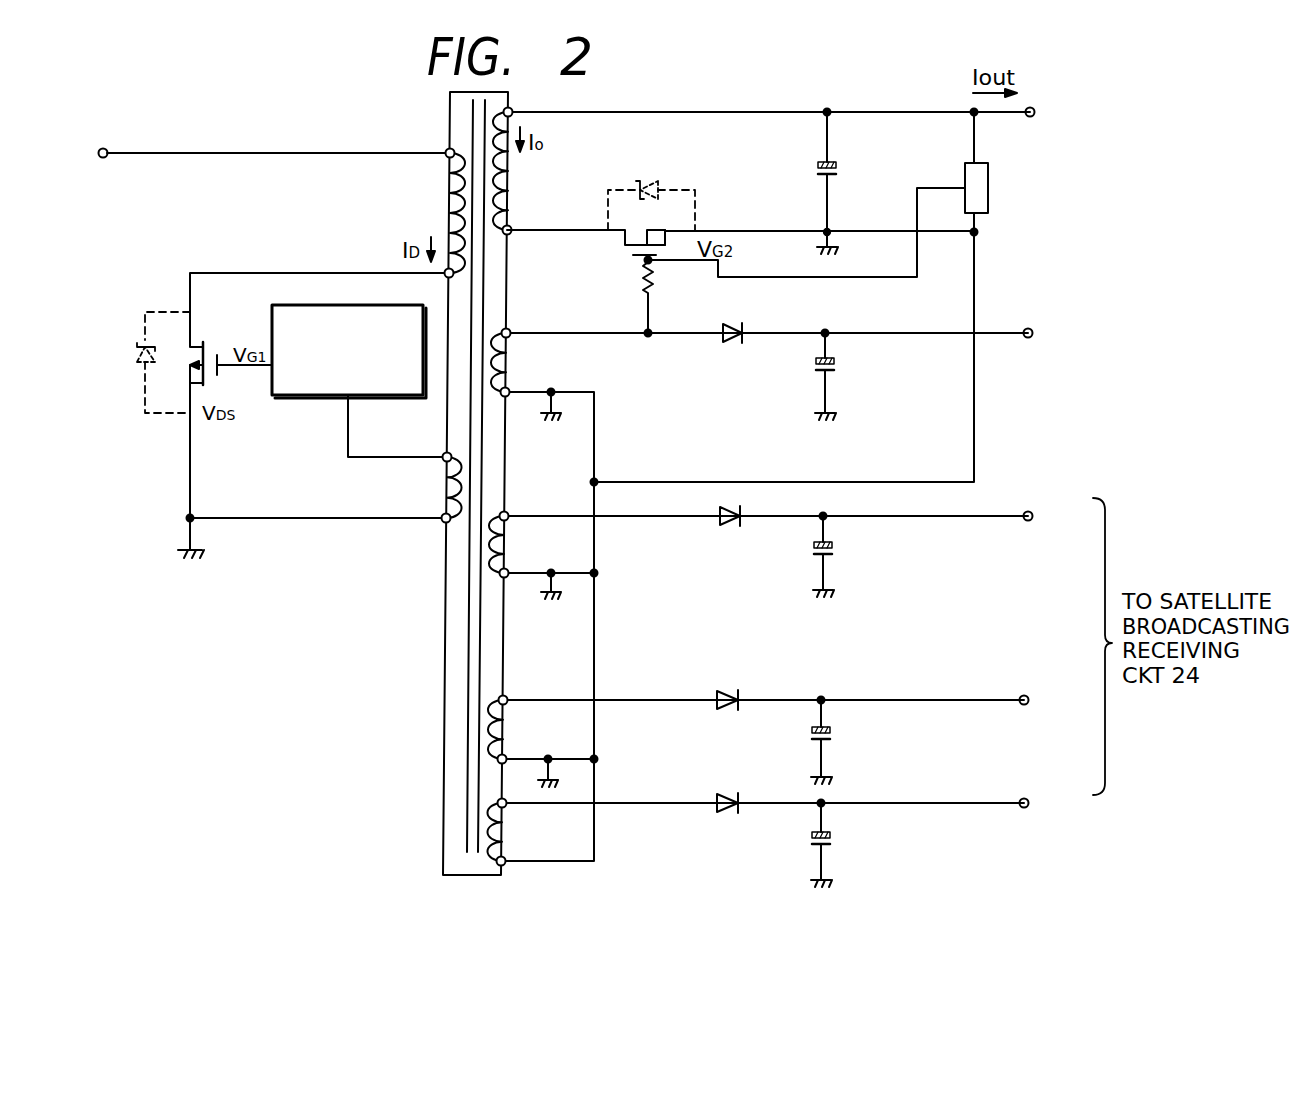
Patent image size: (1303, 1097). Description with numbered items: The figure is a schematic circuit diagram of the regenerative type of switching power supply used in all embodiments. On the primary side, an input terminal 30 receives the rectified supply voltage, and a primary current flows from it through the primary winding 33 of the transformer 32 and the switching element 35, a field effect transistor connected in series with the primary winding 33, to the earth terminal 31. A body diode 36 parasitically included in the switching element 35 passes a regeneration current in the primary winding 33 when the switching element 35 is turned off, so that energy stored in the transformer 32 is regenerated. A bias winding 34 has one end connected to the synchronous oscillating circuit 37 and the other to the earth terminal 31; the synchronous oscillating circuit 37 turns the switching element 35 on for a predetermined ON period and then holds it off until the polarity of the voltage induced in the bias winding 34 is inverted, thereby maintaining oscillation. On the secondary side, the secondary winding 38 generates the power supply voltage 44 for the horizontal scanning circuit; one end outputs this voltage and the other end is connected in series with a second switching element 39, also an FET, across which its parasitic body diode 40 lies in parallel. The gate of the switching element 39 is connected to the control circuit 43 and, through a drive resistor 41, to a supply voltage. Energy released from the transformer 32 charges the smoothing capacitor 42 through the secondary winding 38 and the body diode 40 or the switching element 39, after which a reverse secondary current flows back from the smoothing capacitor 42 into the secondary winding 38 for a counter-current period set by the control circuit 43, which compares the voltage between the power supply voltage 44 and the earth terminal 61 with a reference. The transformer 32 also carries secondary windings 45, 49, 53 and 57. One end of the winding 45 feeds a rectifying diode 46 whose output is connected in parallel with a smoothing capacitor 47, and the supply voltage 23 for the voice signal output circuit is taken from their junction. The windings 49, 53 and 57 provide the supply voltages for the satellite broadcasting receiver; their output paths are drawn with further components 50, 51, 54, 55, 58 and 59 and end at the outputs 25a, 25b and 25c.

The input terminal 30 is at (108, 149).
The earth terminal 31 is at (193, 573).
The transformer 32 is at (437, 636).
The primary winding 33 is at (437, 215).
The bias winding 34 is at (437, 487).
The switching element 35 is at (201, 334).
The body diode 36 is at (131, 357).
The synchronous oscillating circuit 37 is at (280, 395).
The secondary winding 38 is at (512, 201).
The switching element 39 is at (618, 252).
The body diode 40 is at (667, 181).
The drive resistor 41 is at (655, 293).
The smoothing capacitor 42 is at (845, 171).
The control circuit 43 is at (990, 189).
The power supply voltage 44 is at (1035, 108).
The secondary winding 45 is at (511, 386).
The rectifying diode 46 is at (738, 347).
The smoothing capacitor 47 is at (808, 371).
The supply voltage for the voice signal output circuit 23 is at (1033, 329).
The earth terminal 61 is at (976, 433).
The secondary winding 49 is at (510, 561).
The diode 50 is at (728, 525).
The capacitor 51 is at (811, 563).
The output terminal 25a is at (1033, 514).
The secondary winding 53 is at (508, 739).
The diode 54 is at (722, 715).
The capacitor 55 is at (807, 739).
The output terminal 25b is at (1029, 698).
The secondary winding 57 is at (505, 848).
The diode 58 is at (722, 815).
The capacitor 59 is at (800, 845).
The output terminal 25c is at (1029, 800).